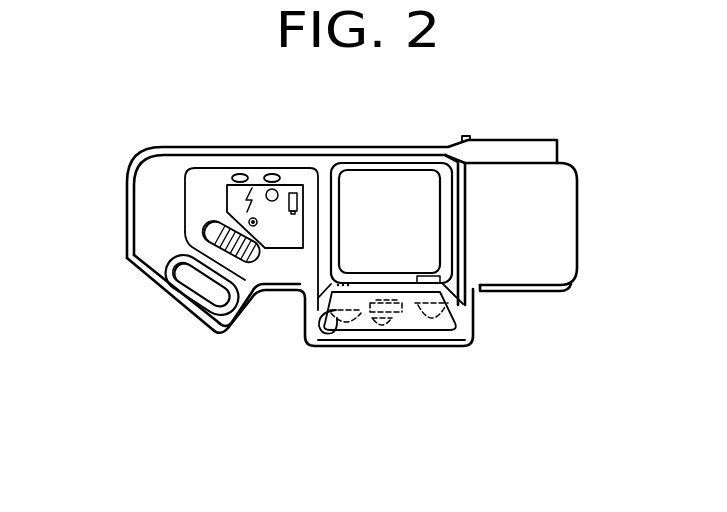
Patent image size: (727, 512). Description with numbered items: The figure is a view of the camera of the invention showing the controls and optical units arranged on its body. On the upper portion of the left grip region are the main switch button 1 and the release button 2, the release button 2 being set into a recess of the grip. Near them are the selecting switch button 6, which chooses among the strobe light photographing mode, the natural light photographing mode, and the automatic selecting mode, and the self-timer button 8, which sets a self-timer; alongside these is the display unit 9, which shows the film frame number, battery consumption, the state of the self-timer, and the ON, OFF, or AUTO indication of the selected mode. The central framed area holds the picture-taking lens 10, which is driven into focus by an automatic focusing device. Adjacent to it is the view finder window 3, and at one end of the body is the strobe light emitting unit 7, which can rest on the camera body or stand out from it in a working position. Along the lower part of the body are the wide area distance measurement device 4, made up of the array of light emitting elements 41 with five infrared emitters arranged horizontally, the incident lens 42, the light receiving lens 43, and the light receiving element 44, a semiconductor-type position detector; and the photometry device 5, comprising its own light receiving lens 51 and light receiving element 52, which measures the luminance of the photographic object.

The main switch button 1 is at (207, 224).
The release button 2 is at (198, 283).
The view finder window 3 is at (518, 291).
The wide area distance measurement device 4 is at (387, 370).
The array of light emitting elements 41 is at (483, 322).
The incident lens 42 is at (476, 350).
The light receiving lens 43 is at (325, 325).
The light receiving element 44 is at (318, 307).
The photometry device 5 is at (398, 386).
The light receiving lens 51 is at (388, 325).
The light receiving element 52 is at (402, 322).
The selecting switch button 6 is at (238, 171).
The strobe light emitting unit 7 is at (393, 193).
The self-timer button 8 is at (272, 173).
The display unit 9 is at (292, 191).
The picture-taking lens 10 is at (368, 352).